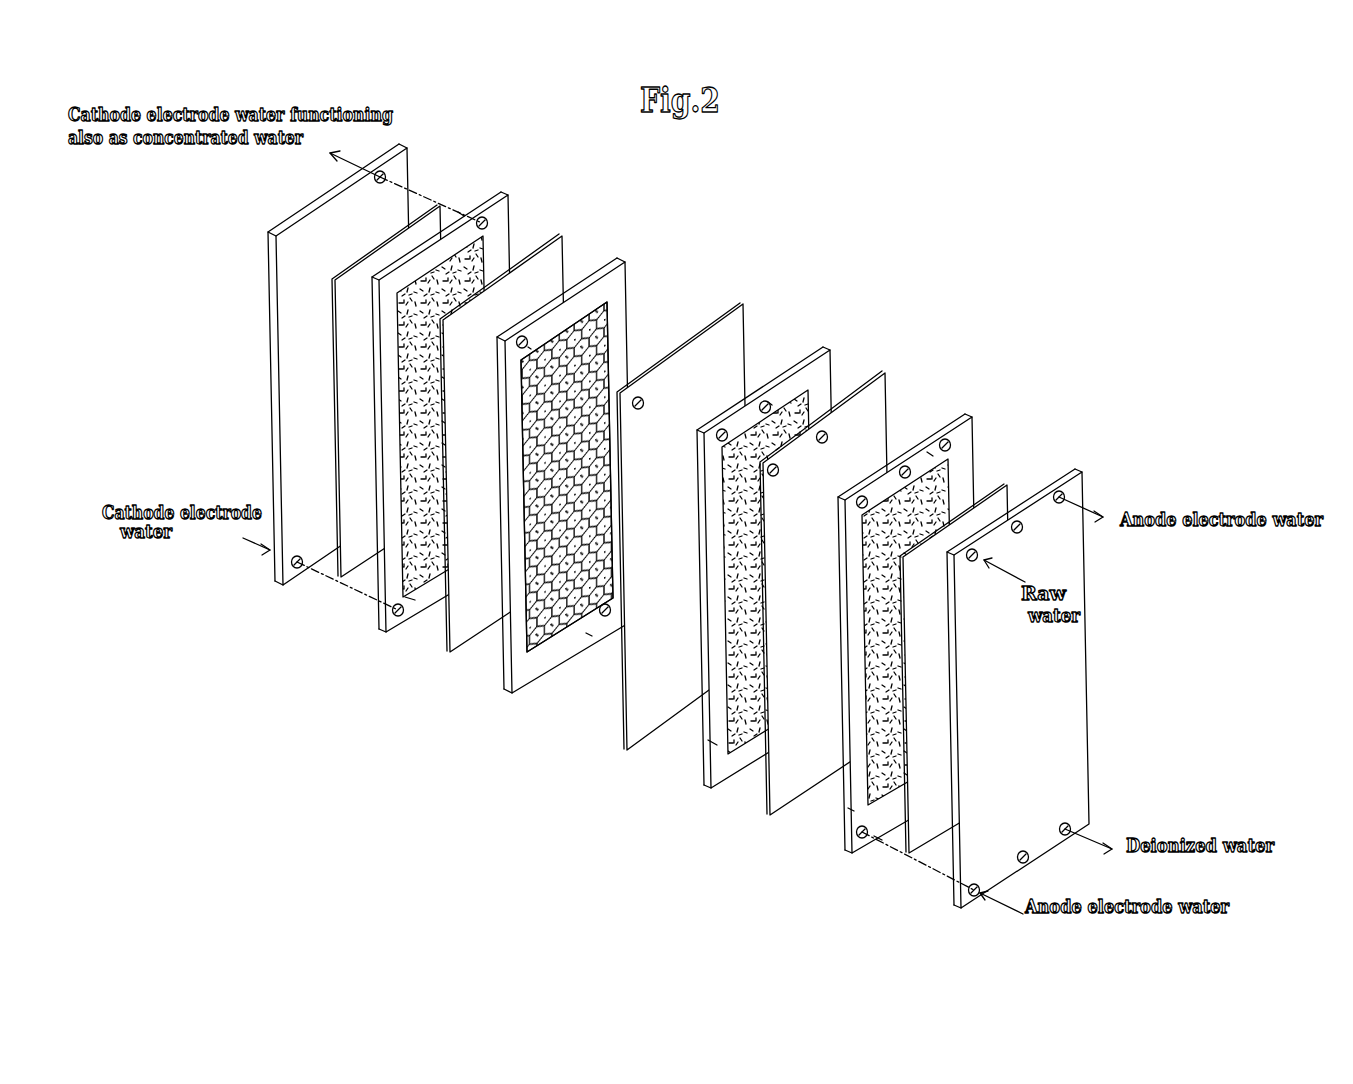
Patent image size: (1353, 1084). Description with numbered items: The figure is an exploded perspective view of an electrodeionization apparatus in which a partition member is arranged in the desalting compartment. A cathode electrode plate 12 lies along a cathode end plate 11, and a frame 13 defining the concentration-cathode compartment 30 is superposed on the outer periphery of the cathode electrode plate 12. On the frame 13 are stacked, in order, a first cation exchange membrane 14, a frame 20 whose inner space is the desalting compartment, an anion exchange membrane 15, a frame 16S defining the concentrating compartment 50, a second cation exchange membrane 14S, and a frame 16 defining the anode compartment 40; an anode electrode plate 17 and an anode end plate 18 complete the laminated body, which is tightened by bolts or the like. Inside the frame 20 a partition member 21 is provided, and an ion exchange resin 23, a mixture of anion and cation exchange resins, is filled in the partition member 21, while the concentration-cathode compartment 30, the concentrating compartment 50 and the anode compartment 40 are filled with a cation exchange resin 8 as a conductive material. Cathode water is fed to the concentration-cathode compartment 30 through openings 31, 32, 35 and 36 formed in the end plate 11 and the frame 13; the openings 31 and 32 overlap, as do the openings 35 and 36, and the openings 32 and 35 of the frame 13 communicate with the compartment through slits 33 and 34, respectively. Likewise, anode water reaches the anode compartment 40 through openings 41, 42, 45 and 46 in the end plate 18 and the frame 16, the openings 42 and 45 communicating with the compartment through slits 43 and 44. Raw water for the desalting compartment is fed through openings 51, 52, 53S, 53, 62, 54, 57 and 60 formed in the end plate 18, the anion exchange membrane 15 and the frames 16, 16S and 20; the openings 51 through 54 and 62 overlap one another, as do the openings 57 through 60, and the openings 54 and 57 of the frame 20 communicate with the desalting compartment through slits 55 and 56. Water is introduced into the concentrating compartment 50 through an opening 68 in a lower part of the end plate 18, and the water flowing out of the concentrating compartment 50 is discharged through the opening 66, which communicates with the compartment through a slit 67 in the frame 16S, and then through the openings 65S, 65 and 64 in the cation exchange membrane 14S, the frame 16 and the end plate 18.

The cation exchange resin 8 is at (415, 410).
The cathode end plate 11 is at (300, 392).
The cathode electrode plate 12 is at (350, 292).
The frame for defining a concentration-cathode compartment 13 is at (543, 435).
The first cation exchange membrane 14 is at (553, 250).
The second cation exchange membrane 14S is at (887, 425).
The anion exchange membrane 15 is at (728, 320).
The frame for defining an anode compartment 16 is at (853, 810).
The frame for defining a concentrating compartment 16S is at (717, 745).
The anode electrode plate 17 is at (1010, 492).
The anode end plate 18 is at (1068, 681).
The frame for defining a desalting compartment 20 is at (571, 482).
The partition member 21 is at (565, 509).
The ion exchange resin 23 is at (608, 328).
The concentration-cathode compartment 30 is at (543, 407).
The opening 31 is at (297, 569).
The opening 32 is at (398, 617).
The slit 33 is at (410, 600).
The slit 34 is at (462, 215).
The opening 35 is at (482, 216).
The opening 36 is at (380, 184).
The anode compartment 40 is at (975, 423).
The opening 41 is at (974, 883).
The opening 42 is at (862, 838).
The slit 43 is at (878, 836).
The slit 44 is at (930, 455).
The opening 45 is at (945, 439).
The opening 46 is at (1059, 504).
The concentrating compartment 50 is at (830, 352).
The opening 51 is at (972, 562).
The opening 52 is at (862, 496).
The opening 53 is at (644, 404).
The opening 53S is at (778, 476).
The opening 54 is at (516, 338).
The slit 55 is at (530, 345).
The slit 56 is at (590, 636).
The opening 57 is at (605, 617).
The opening 60 is at (1065, 822).
The opening 62 is at (722, 428).
The opening 64 is at (1018, 534).
The opening 65 is at (905, 466).
The opening 65S is at (823, 443).
The opening 66 is at (762, 402).
The slit 67 is at (770, 402).
The opening 68 is at (1023, 850).